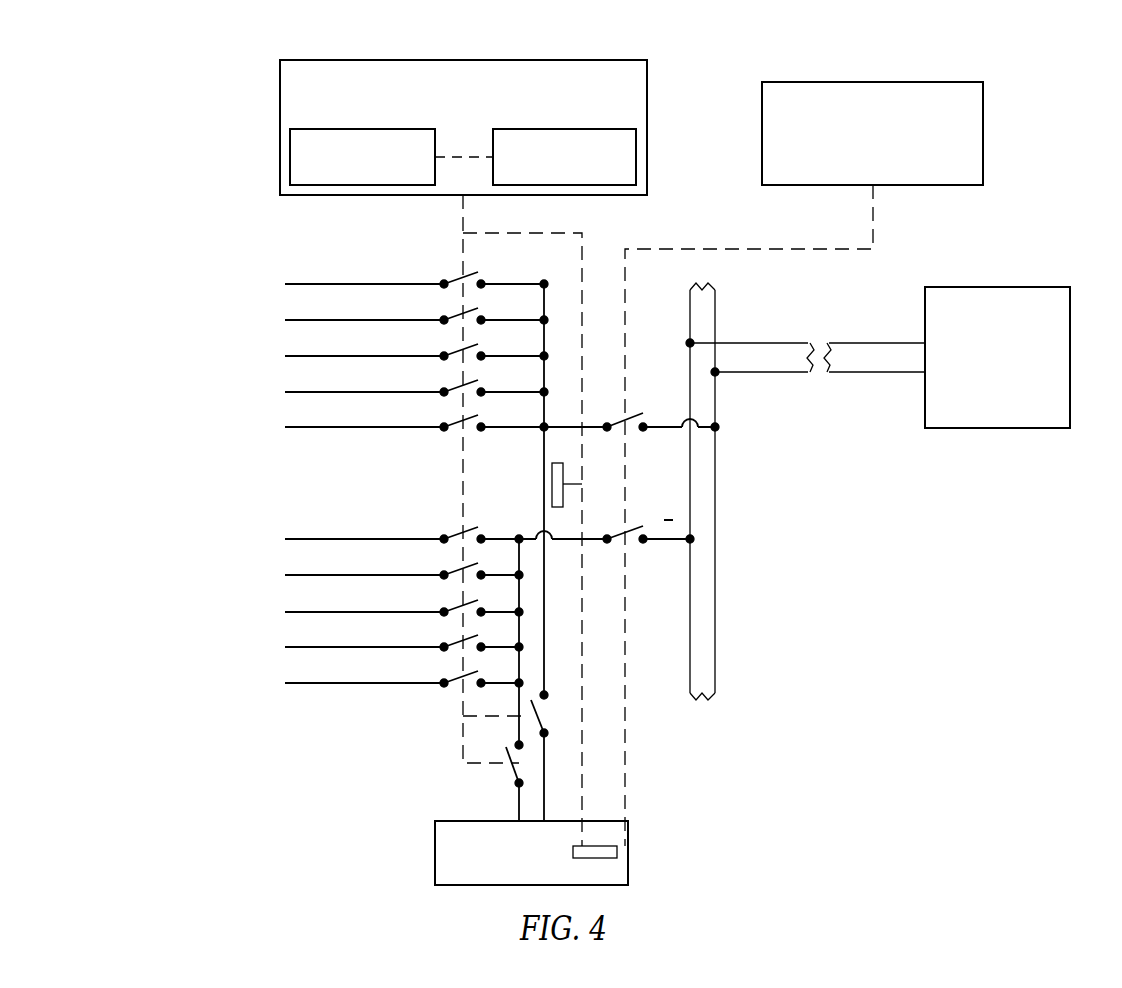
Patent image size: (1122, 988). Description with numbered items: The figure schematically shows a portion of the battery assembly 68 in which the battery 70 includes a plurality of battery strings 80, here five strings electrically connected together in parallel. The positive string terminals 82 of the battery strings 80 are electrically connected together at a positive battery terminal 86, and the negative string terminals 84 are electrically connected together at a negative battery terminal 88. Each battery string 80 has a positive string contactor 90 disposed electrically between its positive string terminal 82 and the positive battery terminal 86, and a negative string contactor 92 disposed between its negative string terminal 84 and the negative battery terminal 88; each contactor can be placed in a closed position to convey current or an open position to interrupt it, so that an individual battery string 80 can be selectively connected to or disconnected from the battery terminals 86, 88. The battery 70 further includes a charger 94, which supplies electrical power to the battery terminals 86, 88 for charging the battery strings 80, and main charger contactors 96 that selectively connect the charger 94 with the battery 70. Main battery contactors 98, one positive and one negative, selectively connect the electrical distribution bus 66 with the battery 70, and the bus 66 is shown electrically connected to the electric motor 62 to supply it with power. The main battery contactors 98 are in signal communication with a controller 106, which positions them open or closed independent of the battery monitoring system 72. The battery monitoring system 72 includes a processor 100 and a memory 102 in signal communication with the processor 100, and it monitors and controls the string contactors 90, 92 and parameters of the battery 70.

The electric motor 62 is at (1012, 386).
The electrical distribution bus 66 is at (728, 610).
The battery assembly 68 is at (926, 103).
The battery 70 is at (392, 542).
The battery monitoring system 72 is at (467, 127).
The battery strings 80 is at (392, 518).
The positive string terminals 82 is at (330, 262).
The negative string terminals 84 is at (338, 697).
The positive battery terminal 86 is at (544, 335).
The negative battery terminal 88 is at (519, 630).
The positive string contactor 90 is at (453, 270).
The negative string contactor 92 is at (455, 690).
The charger 94 is at (535, 853).
The main charger contactors 96 is at (558, 745).
The main battery contactors 98 is at (643, 402).
The processor 100 is at (290, 158).
The memory 102 is at (636, 158).
The controller 106 is at (894, 161).